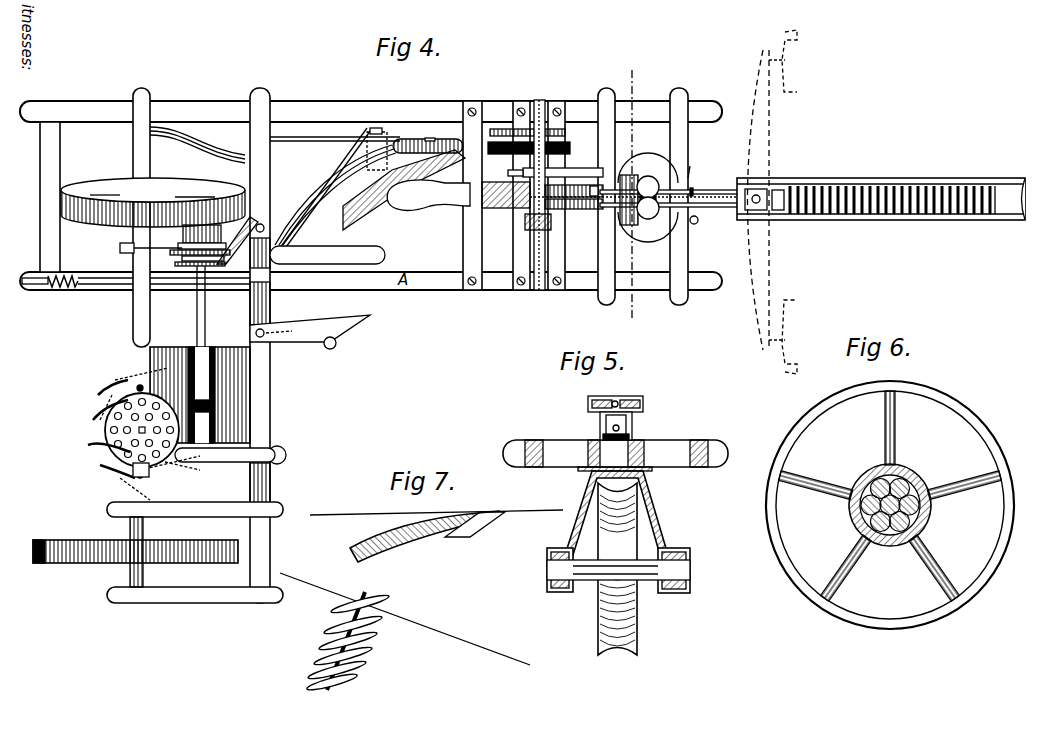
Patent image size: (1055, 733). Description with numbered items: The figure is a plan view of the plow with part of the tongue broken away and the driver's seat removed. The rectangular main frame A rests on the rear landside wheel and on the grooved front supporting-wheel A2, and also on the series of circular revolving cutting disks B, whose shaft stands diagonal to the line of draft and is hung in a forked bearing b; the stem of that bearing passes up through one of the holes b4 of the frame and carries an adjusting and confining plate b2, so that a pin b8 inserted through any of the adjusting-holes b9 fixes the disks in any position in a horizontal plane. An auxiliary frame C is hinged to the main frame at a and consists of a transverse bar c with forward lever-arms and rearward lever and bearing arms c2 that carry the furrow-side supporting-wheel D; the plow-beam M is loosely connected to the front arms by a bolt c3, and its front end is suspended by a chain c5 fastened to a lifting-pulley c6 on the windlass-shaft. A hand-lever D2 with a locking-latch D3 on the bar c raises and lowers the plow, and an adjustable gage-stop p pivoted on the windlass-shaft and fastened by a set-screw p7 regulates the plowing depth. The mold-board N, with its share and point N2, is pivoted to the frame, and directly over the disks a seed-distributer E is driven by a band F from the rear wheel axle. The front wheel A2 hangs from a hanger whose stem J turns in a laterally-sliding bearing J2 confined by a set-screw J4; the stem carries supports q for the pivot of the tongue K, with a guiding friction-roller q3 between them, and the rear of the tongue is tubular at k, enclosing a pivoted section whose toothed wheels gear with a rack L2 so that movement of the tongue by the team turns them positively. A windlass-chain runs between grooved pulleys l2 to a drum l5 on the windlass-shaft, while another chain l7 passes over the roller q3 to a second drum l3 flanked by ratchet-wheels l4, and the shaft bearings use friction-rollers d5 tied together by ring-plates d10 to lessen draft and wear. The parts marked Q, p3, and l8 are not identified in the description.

In FIG. 4, the main frame A is at (136, 300).
In FIG. 5, the main frame A is at (615, 442).
In FIG. 5, the front supporting-wheel A2 is at (617, 569).
In FIG. 6, the front supporting-wheel A2 is at (965, 430).
In FIG. 4, the hinge pivot a is at (282, 101).
In FIG. 4, the circular revolving cutting disks B is at (105, 430).
In FIG. 7, the circular revolving cutting disks B is at (349, 642).
In FIG. 4, the forked bearing b is at (133, 469).
In FIG. 4, the adjusting and confining plate b2 is at (98, 396).
In FIG. 4, the holes b4 is at (138, 385).
In FIG. 4, the pin b8 is at (172, 481).
In FIG. 4, the adjusting-holes b9 is at (93, 420).
In FIG. 4, the auxiliary frame C is at (323, 351).
In FIG. 4, the transverse bar c is at (269, 345).
In FIG. 4, the rearwardly-extending lever and bearing arms c2 is at (195, 545).
In FIG. 4, the bolt c3 is at (380, 124).
In FIG. 4, the chain c5 is at (570, 148).
In FIG. 4, the lifting-pulley c6 is at (532, 126).
In FIG. 4, the furrow-side supporting-wheel D is at (135, 543).
In FIG. 4, the hand-lever D2 is at (332, 351).
In FIG. 4, the locking-latch D3 is at (310, 327).
In FIG. 5, the friction-rollers d5 is at (670, 550).
In FIG. 6, the friction-rollers d5 is at (897, 540).
In FIG. 6, the ring-plates d10 is at (932, 505).
In FIG. 4, the seed-distributer E is at (200, 385).
In FIG. 4, the band F is at (175, 245).
In FIG. 4, the stem J is at (636, 180).
In FIG. 5, the stem J is at (634, 436).
In FIG. 4, the laterally-sliding bearing J2 is at (645, 178).
In FIG. 5, the laterally-sliding bearing J2 is at (652, 452).
In FIG. 4, the set-screw J4 is at (672, 235).
In FIG. 4, the tongue or pole K is at (881, 186).
In FIG. 4, the tubular part k is at (1003, 200).
In FIG. 4, the rack L2 is at (878, 185).
In FIG. 4, the grooved horizontal pulleys l2 is at (648, 197).
In FIG. 5, the grooved horizontal pulleys l2 is at (615, 394).
In FIG. 4, the drum l3 is at (513, 210).
In FIG. 4, the ratchet-wheel l4 is at (603, 206).
In FIG. 4, the drum l5 is at (582, 210).
In FIG. 4, the windlass-chain l7 is at (728, 238).
In FIG. 4, the cam link l8 is at (428, 190).
In FIG. 4, the plow-beam M is at (369, 182).
In FIG. 4, the mold-board N is at (324, 191).
In FIG. 7, the mold-board N is at (414, 537).
In FIG. 7, the point N2 is at (491, 518).
In FIG. 4, the adjustable gage-stop p is at (563, 164).
In FIG. 4, the spring rod p3 is at (108, 277).
In FIG. 4, the set-screw p7 is at (508, 165).
In FIG. 4, the connection Q is at (430, 138).
In FIG. 5, the supports q is at (602, 433).
In FIG. 5, the guiding friction-roller q3 is at (650, 440).